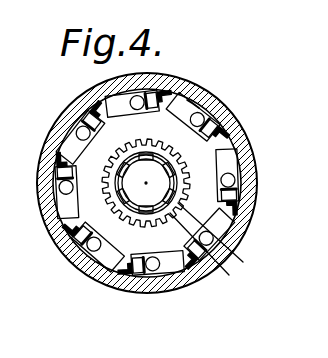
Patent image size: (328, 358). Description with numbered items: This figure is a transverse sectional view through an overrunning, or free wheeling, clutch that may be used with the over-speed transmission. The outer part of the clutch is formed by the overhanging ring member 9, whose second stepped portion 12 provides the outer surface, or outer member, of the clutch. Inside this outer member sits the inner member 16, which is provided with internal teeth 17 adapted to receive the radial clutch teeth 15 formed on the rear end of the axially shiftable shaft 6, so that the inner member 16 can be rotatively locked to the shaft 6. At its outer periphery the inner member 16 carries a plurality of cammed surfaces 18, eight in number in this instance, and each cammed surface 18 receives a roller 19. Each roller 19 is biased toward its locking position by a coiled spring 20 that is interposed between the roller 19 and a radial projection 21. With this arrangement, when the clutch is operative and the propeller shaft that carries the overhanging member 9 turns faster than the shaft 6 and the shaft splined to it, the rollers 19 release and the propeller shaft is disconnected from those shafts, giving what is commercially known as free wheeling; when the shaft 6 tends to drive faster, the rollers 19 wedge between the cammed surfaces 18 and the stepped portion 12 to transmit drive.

The axially shiftable shaft 6 is at (150, 188).
The overhanging ring member 9 is at (62, 131).
The second stepped portion 12 is at (238, 226).
The radial clutch teeth 15 is at (228, 238).
The inner member 16 is at (190, 177).
The internal teeth 17 is at (243, 172).
The cammed surfaces 18 is at (193, 88).
The roller 19 is at (221, 102).
The coiled spring 20 is at (232, 113).
The radial projection 21 is at (236, 128).